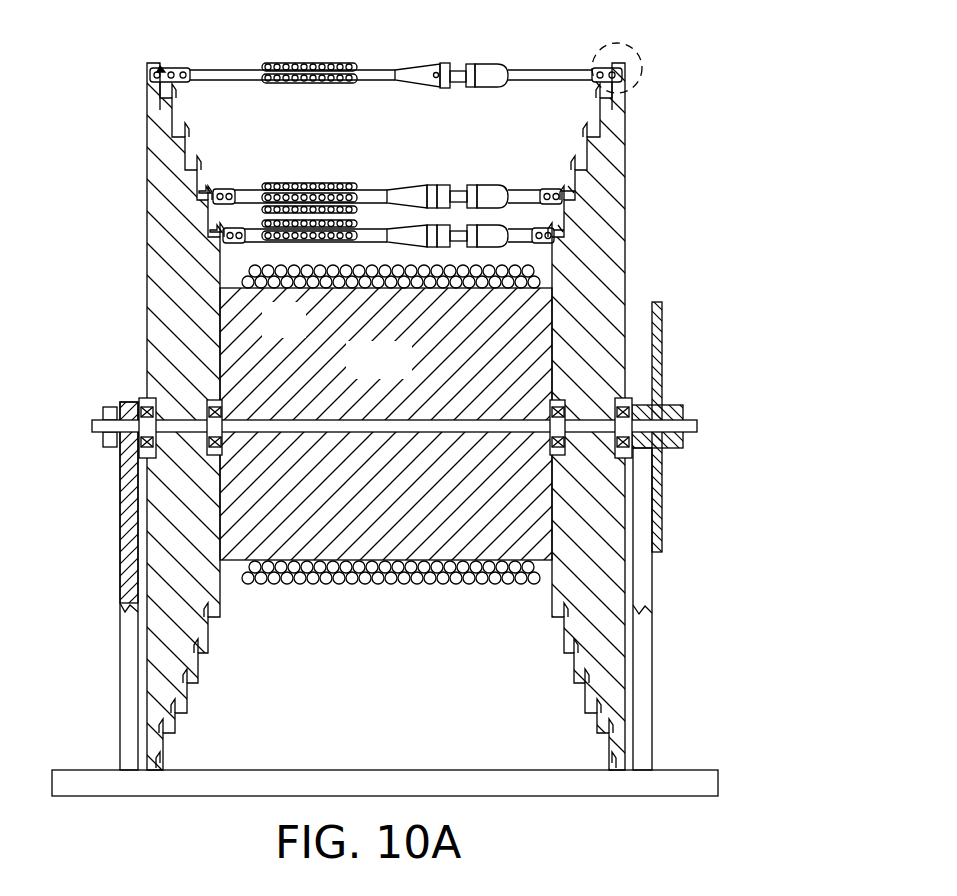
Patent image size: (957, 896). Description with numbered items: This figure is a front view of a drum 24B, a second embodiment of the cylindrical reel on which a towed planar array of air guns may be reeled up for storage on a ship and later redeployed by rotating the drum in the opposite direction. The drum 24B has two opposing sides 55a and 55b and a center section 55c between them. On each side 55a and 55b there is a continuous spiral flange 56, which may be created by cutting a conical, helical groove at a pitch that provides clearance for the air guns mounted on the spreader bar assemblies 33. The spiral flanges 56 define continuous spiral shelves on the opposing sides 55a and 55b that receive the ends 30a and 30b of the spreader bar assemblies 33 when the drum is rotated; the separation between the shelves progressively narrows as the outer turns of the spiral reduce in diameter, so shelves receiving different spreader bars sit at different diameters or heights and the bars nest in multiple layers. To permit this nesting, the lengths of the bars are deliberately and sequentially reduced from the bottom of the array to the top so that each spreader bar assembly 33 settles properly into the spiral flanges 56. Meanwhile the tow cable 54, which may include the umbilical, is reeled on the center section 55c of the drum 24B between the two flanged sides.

The spreader bar end 30a is at (156, 70).
The spreader bar end 30b is at (615, 72).
The spreader bar assembly 33 is at (410, 64).
The continuous spiral flange 56 is at (163, 110).
The first side of the drum 55a is at (145, 182).
The second side of the drum 55b is at (627, 232).
The center section of the drum 55c is at (405, 375).
The tow cable 54 is at (300, 292).
The drum 24B is at (694, 360).